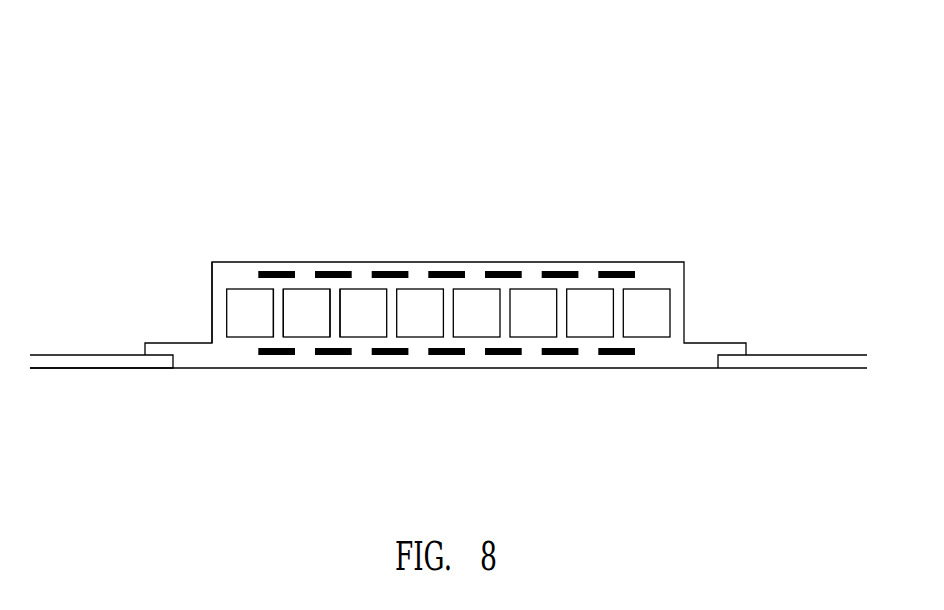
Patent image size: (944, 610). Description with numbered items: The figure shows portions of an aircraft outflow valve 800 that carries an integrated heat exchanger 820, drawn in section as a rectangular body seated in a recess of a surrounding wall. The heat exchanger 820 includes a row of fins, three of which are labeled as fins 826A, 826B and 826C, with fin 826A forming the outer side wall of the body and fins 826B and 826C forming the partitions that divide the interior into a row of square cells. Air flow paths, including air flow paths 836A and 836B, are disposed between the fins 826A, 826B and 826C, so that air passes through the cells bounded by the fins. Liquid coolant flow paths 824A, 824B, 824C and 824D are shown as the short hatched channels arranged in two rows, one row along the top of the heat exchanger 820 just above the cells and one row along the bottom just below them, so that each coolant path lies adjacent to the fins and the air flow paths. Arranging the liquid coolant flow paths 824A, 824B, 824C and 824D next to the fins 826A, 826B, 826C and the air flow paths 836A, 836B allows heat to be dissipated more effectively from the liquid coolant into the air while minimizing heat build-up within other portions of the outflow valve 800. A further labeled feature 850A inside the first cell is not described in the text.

The outflow valve 800 is at (234, 78).
The heat exchanger 820 is at (530, 262).
The liquid coolant flow path 824A is at (623, 355).
The liquid coolant flow path 824B is at (637, 273).
The liquid coolant flow path 824C is at (567, 355).
The liquid coolant flow path 824D is at (580, 273).
The fin 826A is at (212, 299).
The fin 826B is at (284, 307).
The fin 826C is at (340, 317).
The air flow path 836A is at (262, 323).
The air flow path 836B is at (320, 303).
The component in first cavity 850A is at (242, 320).